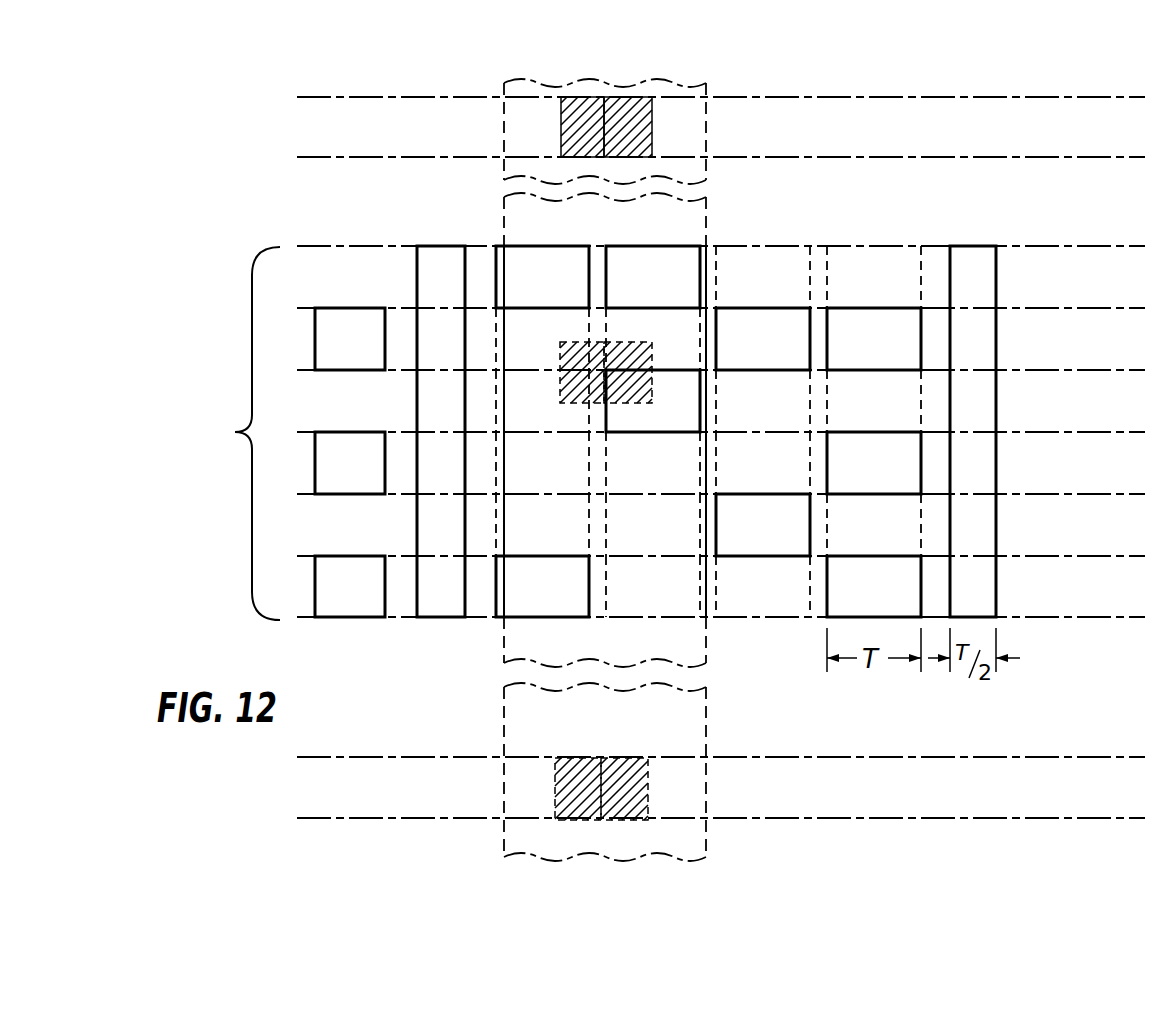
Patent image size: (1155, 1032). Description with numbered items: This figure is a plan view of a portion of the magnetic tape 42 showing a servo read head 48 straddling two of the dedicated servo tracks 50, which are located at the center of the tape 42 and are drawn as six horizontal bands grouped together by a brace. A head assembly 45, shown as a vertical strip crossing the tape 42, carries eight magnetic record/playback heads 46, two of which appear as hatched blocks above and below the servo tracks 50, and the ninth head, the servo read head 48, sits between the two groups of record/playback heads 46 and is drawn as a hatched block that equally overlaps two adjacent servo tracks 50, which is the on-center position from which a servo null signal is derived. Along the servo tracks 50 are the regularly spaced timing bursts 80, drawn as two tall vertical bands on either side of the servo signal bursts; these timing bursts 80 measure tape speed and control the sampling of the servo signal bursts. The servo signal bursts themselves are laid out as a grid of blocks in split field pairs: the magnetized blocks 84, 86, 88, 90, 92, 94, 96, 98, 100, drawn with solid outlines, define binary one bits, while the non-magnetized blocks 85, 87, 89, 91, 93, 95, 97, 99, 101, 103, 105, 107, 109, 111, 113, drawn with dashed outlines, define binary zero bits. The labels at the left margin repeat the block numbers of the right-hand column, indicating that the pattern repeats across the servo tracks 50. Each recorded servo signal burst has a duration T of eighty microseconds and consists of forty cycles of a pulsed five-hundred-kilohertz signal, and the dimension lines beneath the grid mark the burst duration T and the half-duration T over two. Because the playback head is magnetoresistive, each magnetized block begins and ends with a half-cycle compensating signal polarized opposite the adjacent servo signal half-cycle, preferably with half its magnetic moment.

The magnetic tape 42 is at (995, 819).
The head assembly 45 is at (707, 228).
The magnetic record/playback heads 46 is at (560, 127).
The servo read head 48 is at (565, 376).
The servo tracks 50 is at (238, 433).
The timing bursts 80 is at (441, 246).
The magnetized block 84 is at (525, 290).
The non-magnetized block 85 is at (746, 290).
The magnetized block 86 is at (636, 290).
The non-magnetized block 87 is at (857, 290).
The magnetized block 88 is at (746, 352).
The non-magnetized block 89 is at (513, 357).
The magnetized block 90 is at (857, 352).
The non-magnetized block 91 is at (656, 357).
The magnetized block 92 is at (655, 417).
The non-magnetized block 93 is at (513, 419).
The magnetized block 94 is at (857, 476).
The non-magnetized block 95 is at (746, 414).
The magnetized block 96 is at (746, 538).
The non-magnetized block 97 is at (857, 414).
The magnetized block 98 is at (525, 600).
The non-magnetized block 99 is at (525, 476).
The magnetized block 100 is at (851, 600).
The non-magnetized block 101 is at (630, 476).
The non-magnetized block 103 is at (740, 476).
The non-magnetized block 105 is at (519, 538).
The non-magnetized block 107 is at (630, 538).
The non-magnetized block 109 is at (851, 538).
The non-magnetized block 111 is at (634, 600).
The non-magnetized block 113 is at (742, 600).